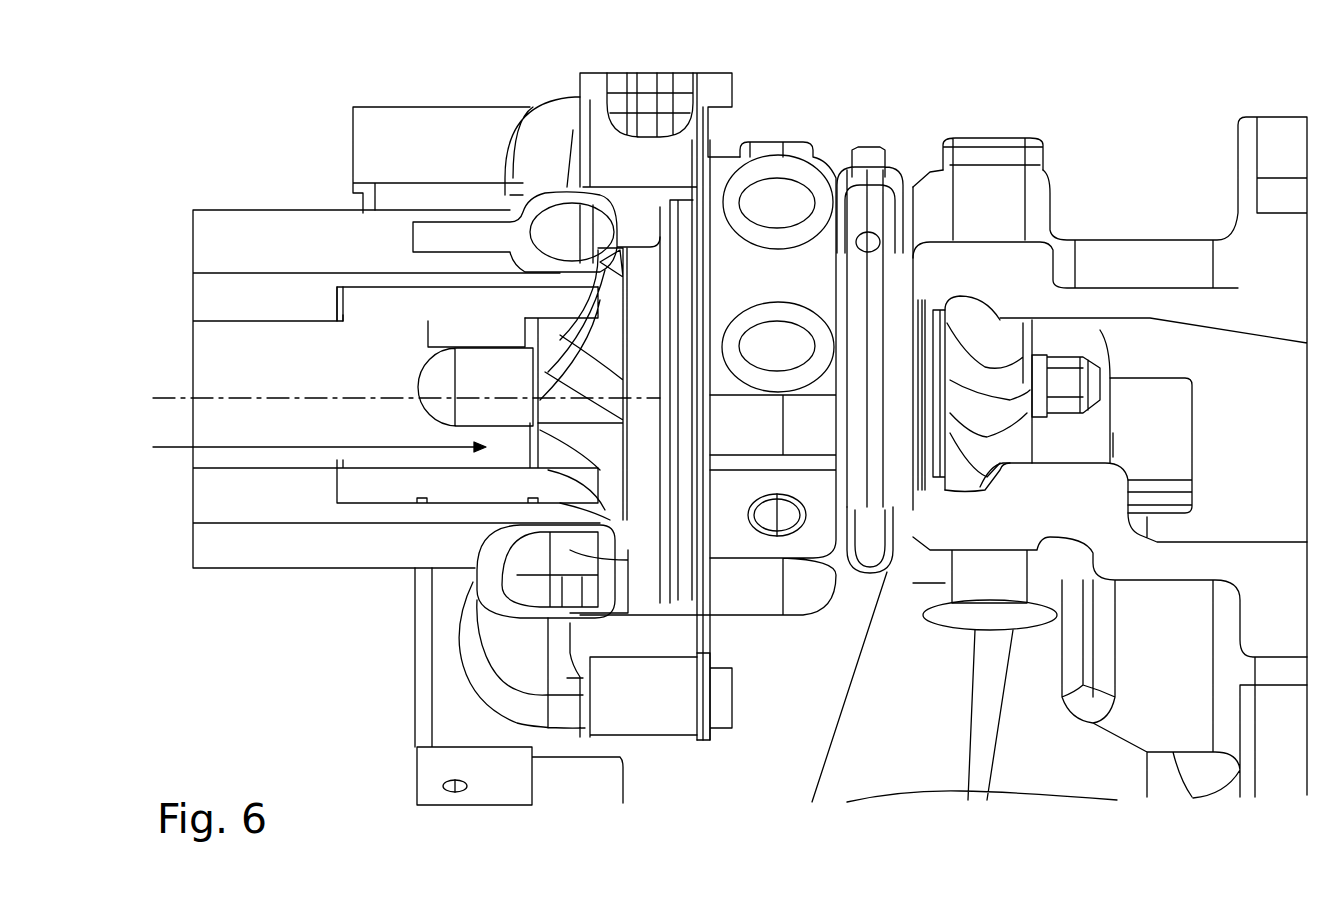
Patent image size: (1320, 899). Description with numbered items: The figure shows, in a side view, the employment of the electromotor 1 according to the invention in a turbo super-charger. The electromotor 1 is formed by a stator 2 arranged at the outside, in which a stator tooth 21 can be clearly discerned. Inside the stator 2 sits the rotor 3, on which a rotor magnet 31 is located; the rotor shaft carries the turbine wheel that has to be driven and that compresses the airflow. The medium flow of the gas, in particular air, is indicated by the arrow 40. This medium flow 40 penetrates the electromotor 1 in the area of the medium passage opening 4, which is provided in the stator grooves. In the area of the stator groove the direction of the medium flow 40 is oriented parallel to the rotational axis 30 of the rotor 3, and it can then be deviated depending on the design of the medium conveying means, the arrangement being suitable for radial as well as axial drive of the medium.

The electromotor 1 is at (250, 593).
The stator 2 is at (448, 322).
The stator tooth 21 is at (400, 305).
The rotor 3 is at (467, 388).
The rotor magnet 31 is at (483, 399).
The medium passage opening 4 is at (512, 452).
The rotational axis 30 is at (255, 397).
The medium flow 40 is at (240, 447).